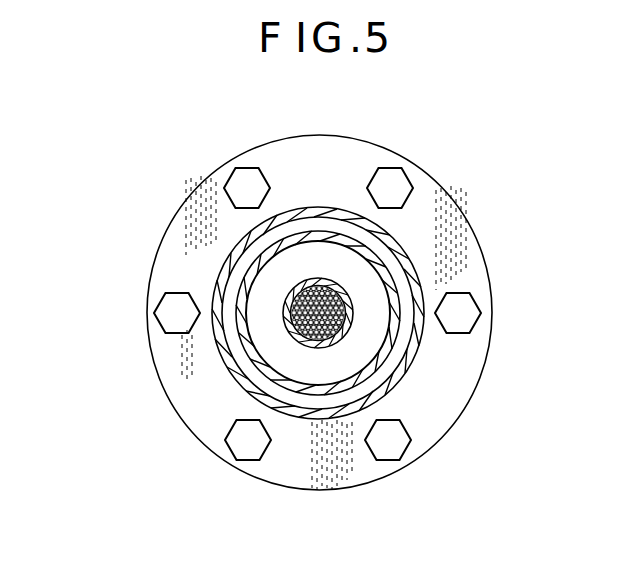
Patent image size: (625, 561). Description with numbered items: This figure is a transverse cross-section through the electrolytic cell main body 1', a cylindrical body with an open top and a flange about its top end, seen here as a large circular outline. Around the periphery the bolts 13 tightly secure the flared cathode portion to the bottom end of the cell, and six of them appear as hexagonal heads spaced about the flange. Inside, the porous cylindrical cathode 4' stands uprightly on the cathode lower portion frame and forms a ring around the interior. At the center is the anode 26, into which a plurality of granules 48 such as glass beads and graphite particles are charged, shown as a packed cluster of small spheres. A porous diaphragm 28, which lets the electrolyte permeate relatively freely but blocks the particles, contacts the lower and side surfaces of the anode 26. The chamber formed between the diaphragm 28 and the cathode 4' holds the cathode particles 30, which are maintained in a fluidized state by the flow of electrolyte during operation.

The electrolytic cell main body 1' is at (309, 312).
The bolts 13 is at (238, 182).
The cathode particles 30 is at (408, 372).
The porous cylindrical cathode 4' is at (299, 313).
The granules 48 is at (350, 333).
The anode 26 is at (327, 280).
The diaphragm 28 is at (310, 284).